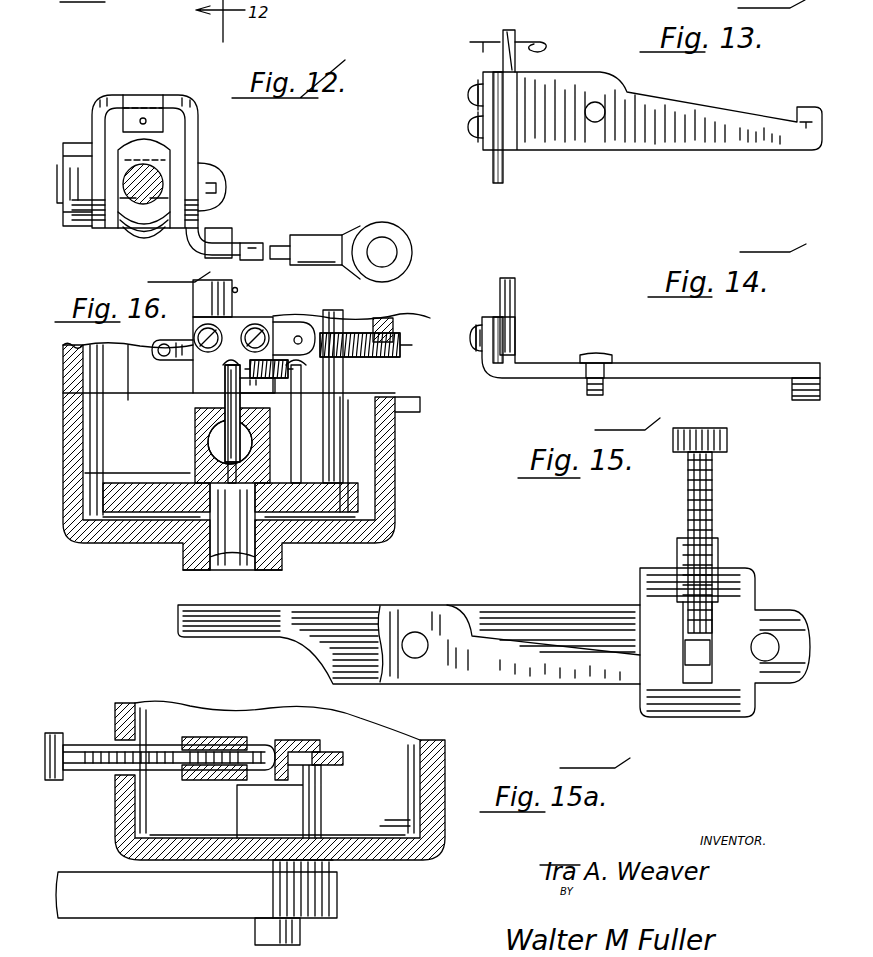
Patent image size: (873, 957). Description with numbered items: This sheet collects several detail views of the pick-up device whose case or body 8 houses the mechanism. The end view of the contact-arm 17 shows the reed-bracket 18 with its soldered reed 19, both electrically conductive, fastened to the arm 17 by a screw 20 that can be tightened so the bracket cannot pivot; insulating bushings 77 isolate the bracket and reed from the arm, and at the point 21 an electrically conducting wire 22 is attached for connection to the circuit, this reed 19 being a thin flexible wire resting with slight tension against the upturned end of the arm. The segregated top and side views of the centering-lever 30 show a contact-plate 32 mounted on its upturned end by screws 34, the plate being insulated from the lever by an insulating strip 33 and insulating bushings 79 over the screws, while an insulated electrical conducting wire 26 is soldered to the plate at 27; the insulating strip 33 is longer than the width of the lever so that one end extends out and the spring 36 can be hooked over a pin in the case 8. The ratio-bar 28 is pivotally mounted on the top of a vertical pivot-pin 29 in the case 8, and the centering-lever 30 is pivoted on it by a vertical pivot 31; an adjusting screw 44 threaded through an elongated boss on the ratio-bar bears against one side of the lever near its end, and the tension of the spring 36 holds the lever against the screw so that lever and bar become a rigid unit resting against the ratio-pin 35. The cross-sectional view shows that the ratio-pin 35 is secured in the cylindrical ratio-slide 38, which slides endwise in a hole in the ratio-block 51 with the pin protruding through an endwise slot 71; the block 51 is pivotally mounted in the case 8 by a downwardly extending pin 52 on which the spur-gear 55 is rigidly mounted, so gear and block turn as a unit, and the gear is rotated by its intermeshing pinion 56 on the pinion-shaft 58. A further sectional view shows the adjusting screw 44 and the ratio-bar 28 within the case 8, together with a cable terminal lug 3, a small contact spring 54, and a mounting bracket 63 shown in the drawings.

In FIG. 12, the cable terminal lug 3 is at (290, 250).
In FIG. 16, the body 8 is at (398, 462).
In FIG. 15A, the body 8 is at (440, 756).
In FIG. 12, the contact-arm 17 is at (133, 218).
In FIG. 12, the reed-bracket 18 is at (146, 118).
In FIG. 16, the reed 19 is at (238, 291).
In FIG. 12, the screw 20 is at (204, 172).
In FIG. 12, the point 21 is at (222, 228).
In FIG. 12, the electrically conducting wire 22 is at (250, 243).
In FIG. 13, the insulated electrical conducting wire 26 is at (534, 52).
In FIG. 13, the solder point 27 is at (480, 44).
In FIG. 16, the solder point 27 is at (164, 344).
In FIG. 16, the ratio-bar 28 is at (268, 395).
In FIG. 15, the ratio-bar 28 is at (584, 602).
In FIG. 15A, the ratio-bar 28 is at (342, 752).
In FIG. 15, the pivot-pin 29 is at (764, 633).
In FIG. 13, the centering-lever 30 is at (692, 105).
In FIG. 14, the centering-lever 30 is at (748, 363).
In FIG. 15, the centering-lever 30 is at (478, 640).
In FIG. 15A, the centering-lever 30 is at (305, 738).
In FIG. 13, the pivot 31 is at (595, 115).
In FIG. 14, the pivot 31 is at (595, 355).
In FIG. 15, the pivot 31 is at (415, 658).
In FIG. 13, the contact-plate 32 is at (512, 34).
In FIG. 14, the contact-plate 32 is at (515, 312).
In FIG. 16, the contact-plate 32 is at (232, 308).
In FIG. 13, the insulating strip 33 is at (500, 180).
In FIG. 14, the insulating strip 33 is at (494, 317).
In FIG. 13, the screws 34 is at (470, 124).
In FIG. 14, the screws 34 is at (474, 344).
In FIG. 16, the screws 34 is at (252, 346).
In FIG. 16, the ratio-pin 35 is at (214, 444).
In FIG. 16, the spring 36 is at (398, 350).
In FIG. 16, the ratio-slide 38 is at (212, 452).
In FIG. 15, the adjusting screw 44 is at (688, 498).
In FIG. 15A, the adjusting screw 44 is at (55, 733).
In FIG. 16, the ratio-block 51 is at (224, 404).
In FIG. 16, the pin 52 is at (283, 548).
In FIG. 16, the contact spring 54 is at (276, 368).
In FIG. 16, the spur-gear 55 is at (140, 500).
In FIG. 16, the pinion 56 is at (352, 512).
In FIG. 16, the pinion-shaft 58 is at (316, 318).
In FIG. 15A, the mounting bracket 63 is at (80, 880).
In FIG. 16, the endwise slot 71 is at (215, 424).
In FIG. 12, the insulating bushings 77 is at (114, 147).
In FIG. 13, the insulating bushings 79 is at (478, 84).
In FIG. 14, the insulating bushings 79 is at (480, 356).